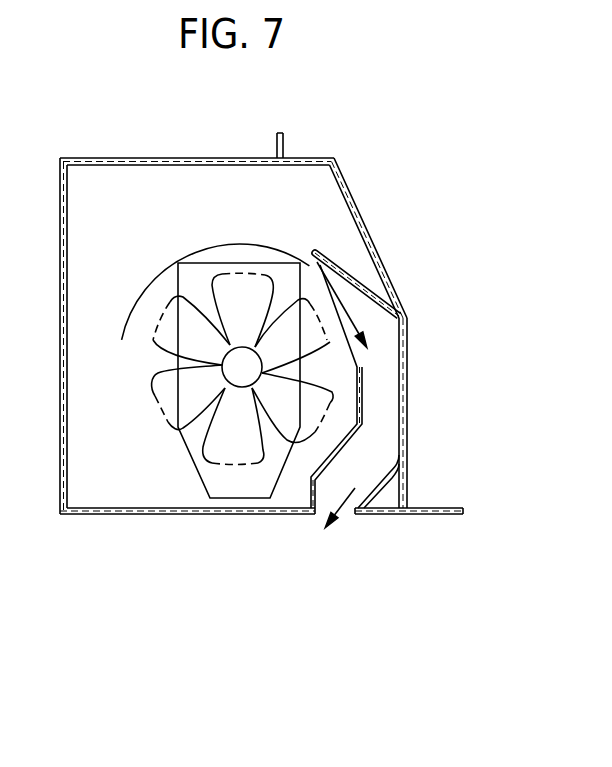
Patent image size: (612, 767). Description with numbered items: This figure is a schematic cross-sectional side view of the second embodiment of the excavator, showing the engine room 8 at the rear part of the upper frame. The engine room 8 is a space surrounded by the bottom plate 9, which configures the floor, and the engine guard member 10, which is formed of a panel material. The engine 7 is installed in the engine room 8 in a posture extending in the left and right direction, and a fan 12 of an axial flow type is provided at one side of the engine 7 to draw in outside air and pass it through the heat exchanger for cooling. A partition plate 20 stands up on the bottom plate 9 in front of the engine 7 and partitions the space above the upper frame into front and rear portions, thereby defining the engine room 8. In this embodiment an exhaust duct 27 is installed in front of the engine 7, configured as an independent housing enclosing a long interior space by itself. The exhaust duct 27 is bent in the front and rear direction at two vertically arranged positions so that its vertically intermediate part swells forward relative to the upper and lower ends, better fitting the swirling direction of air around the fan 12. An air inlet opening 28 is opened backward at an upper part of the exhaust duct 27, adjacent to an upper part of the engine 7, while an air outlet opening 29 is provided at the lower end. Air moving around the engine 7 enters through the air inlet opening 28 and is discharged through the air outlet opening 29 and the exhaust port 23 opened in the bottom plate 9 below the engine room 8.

The engine 7 is at (244, 485).
The engine room 8 is at (82, 314).
The bottom plate 9 is at (184, 516).
The engine guard member 10 is at (157, 157).
The fan 12 is at (153, 398).
The partition plate 20 is at (377, 243).
The exhaust port 23 is at (318, 516).
The exhaust duct 27 is at (410, 345).
The air inlet opening 28 is at (322, 300).
The air outlet opening 29 is at (350, 514).